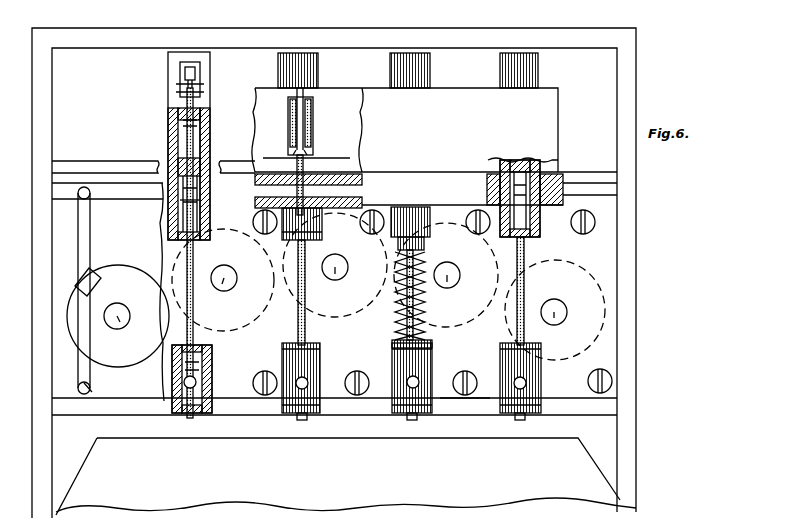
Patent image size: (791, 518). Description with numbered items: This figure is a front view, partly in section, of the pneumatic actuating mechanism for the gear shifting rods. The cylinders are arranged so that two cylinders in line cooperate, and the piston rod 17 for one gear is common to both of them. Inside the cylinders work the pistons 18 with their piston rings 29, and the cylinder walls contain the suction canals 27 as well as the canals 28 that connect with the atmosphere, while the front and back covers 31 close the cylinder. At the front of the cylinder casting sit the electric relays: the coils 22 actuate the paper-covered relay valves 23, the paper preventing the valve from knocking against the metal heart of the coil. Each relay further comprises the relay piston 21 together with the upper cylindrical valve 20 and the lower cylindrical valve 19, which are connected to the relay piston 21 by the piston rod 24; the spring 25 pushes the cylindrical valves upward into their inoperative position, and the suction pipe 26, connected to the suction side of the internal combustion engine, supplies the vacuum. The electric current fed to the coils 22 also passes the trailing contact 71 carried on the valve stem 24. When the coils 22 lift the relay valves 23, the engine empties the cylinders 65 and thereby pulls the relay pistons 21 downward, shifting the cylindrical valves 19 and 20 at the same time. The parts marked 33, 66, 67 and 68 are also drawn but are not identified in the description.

The piston rod 17 is at (116, 320).
The piston 18 is at (123, 282).
The lower cylindrical valve 19 is at (205, 375).
The upper cylindrical valve 20 is at (208, 202).
The relay piston 21 is at (168, 128).
The coil 22 is at (312, 108).
The relay valve 23 is at (313, 156).
The piston rod 24 is at (193, 333).
The spring 25 is at (404, 300).
The suction pipe 26 is at (354, 196).
The suction canal 27 is at (84, 233).
The atmosphere canal 28 is at (86, 385).
The piston ring 29 is at (94, 279).
The front and back cover 31 is at (465, 372).
The shelf 33 is at (68, 168).
The cylinder 65 is at (208, 140).
The knurled sleeve 66 is at (178, 207).
The knurled sleeve 67 is at (210, 405).
The casing 68 is at (481, 42).
The trailing contact 71 is at (185, 72).